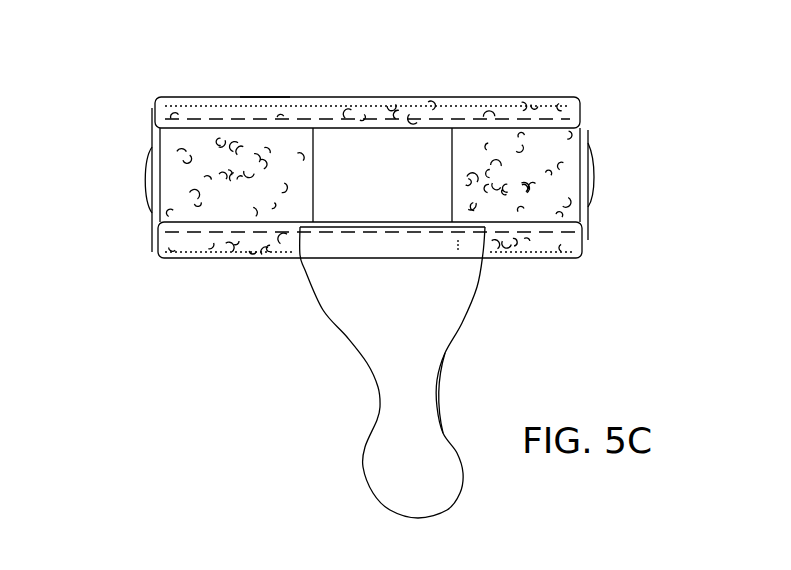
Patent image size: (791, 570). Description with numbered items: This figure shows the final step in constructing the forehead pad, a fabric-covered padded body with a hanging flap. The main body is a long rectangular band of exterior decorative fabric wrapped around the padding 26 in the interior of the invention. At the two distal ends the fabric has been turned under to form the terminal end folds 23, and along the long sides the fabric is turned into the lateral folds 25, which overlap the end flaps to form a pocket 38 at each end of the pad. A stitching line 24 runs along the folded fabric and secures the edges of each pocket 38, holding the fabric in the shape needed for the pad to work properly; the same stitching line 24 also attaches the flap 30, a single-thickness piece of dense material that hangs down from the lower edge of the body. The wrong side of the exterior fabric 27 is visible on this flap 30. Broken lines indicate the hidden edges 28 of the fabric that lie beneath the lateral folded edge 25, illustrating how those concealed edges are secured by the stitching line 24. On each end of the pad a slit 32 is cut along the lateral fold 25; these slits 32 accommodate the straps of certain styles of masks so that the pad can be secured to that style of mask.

The terminal end folds 23 is at (148, 117).
The stitching line 24 is at (378, 118).
The lateral fold 25 is at (263, 95).
The padding 26 is at (403, 170).
The wrong side of exterior fabric 27 is at (387, 308).
The hidden fabric edges 28 is at (290, 100).
The flap 30 is at (446, 358).
The slits 32 is at (152, 173).
The pocket 38 is at (233, 165).